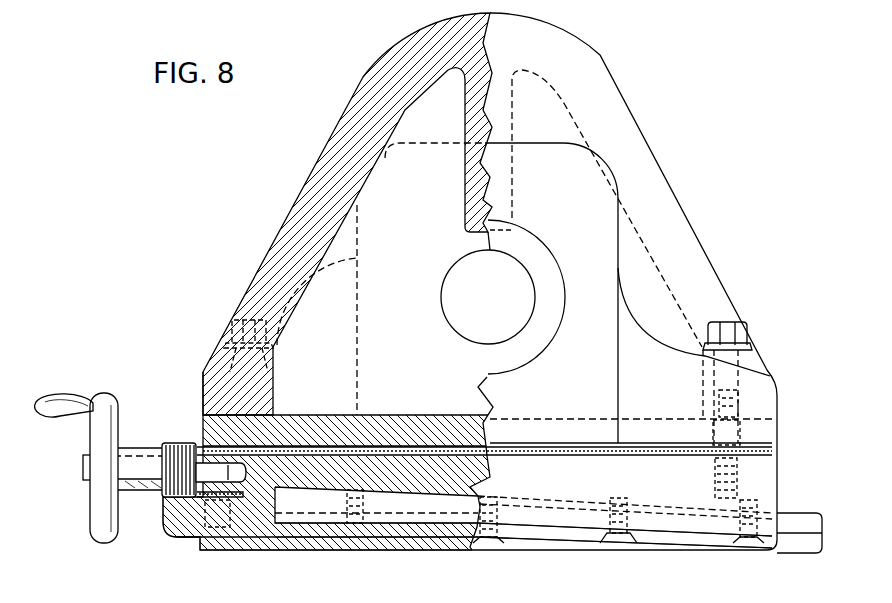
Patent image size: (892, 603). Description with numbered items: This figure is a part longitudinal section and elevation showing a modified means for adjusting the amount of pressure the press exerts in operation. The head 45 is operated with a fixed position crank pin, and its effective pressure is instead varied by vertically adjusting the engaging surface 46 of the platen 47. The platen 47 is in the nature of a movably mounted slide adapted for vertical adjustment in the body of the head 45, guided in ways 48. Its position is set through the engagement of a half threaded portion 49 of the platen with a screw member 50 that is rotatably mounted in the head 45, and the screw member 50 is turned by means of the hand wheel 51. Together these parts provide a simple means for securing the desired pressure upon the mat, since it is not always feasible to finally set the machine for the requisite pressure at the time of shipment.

The head 45 is at (687, 231).
The engaging surface 46 is at (393, 548).
The platen 47 is at (800, 520).
The ways 48 is at (576, 535).
The half threaded portion 49 is at (197, 500).
The screw member 50 is at (185, 445).
The hand wheel 51 is at (108, 405).